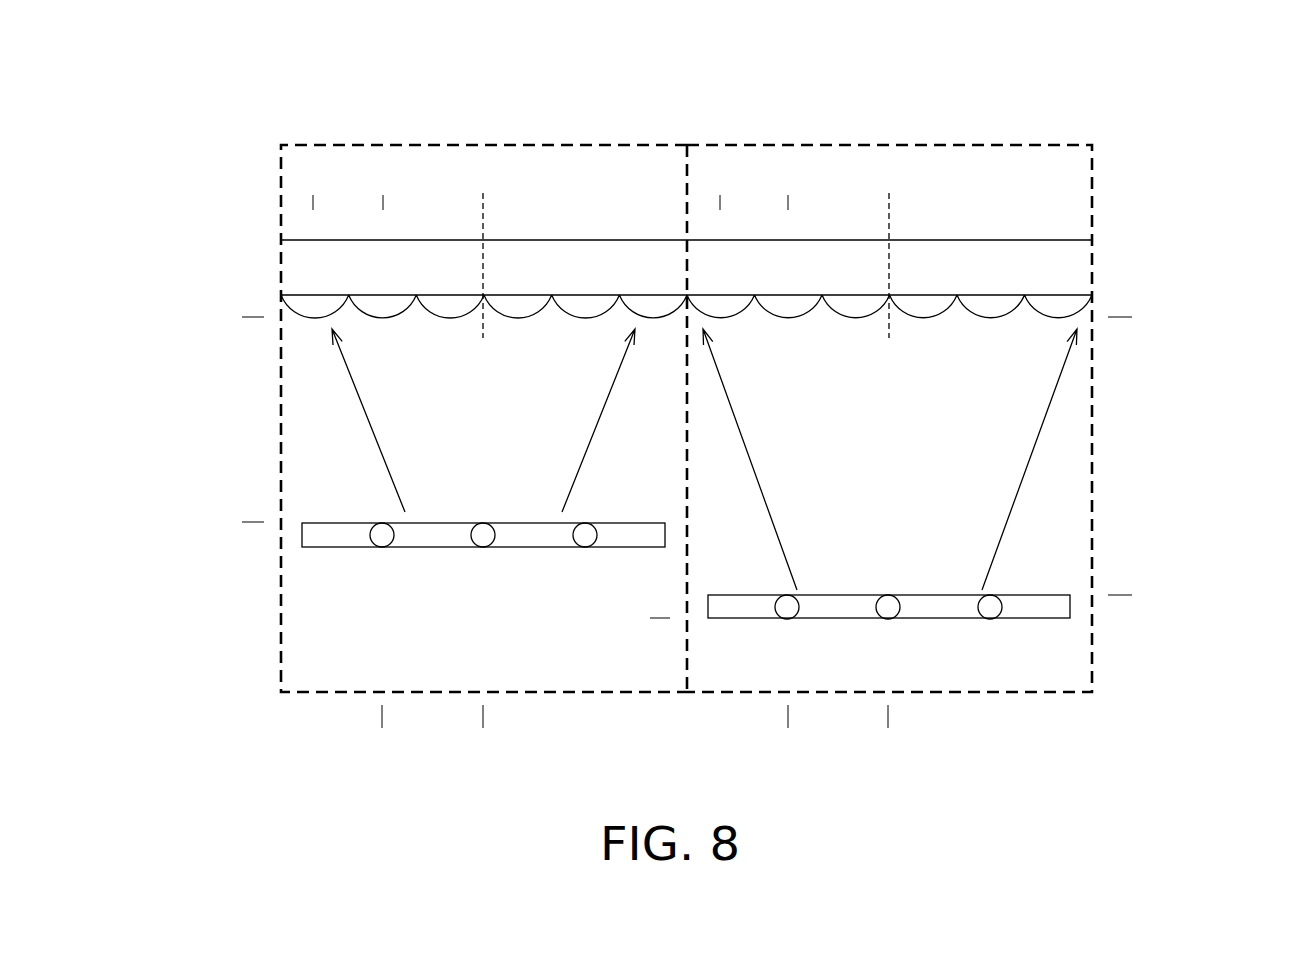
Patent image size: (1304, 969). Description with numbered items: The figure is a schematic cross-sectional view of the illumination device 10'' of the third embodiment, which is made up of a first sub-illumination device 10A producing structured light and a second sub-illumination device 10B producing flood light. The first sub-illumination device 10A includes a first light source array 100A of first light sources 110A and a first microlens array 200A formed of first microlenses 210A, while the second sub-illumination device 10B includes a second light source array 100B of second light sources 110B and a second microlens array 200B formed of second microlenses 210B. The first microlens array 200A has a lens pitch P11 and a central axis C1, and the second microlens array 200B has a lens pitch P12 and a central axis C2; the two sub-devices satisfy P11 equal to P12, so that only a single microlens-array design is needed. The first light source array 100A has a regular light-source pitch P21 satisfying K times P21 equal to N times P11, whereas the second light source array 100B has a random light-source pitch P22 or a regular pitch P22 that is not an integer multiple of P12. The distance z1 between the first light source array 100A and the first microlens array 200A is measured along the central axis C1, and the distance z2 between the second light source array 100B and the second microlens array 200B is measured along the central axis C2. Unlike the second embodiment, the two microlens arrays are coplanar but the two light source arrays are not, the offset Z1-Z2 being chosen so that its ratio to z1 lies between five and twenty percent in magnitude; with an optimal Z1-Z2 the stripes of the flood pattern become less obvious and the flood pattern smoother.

The second sub-illumination device 10B is at (347, 145).
The first sub-illumination device 10A is at (1027, 145).
The second microlenses 210B is at (302, 306).
The second microlens array 200B is at (378, 279).
The first microlenses 210A is at (1063, 307).
The first microlens array 200A is at (993, 279).
The second light sources 110B is at (382, 535).
The second light source array 100B is at (367, 556).
The first light sources 110A is at (990, 607).
The first light source array 100A is at (1004, 627).
The central axis of the second microlens array C2 is at (485, 208).
The central axis of the first microlens array C1 is at (892, 208).
The lens pitch of the second microlens array P12 is at (374, 200).
The lens pitch of the first microlens array P11 is at (779, 200).
The light-source pitch of the second light source array P22 is at (474, 718).
The light-source pitch of the first light source array P21 is at (879, 718).
The distance between the second light source array and the second microlens array z2 is at (248, 317).
The distance between the first light source array and the first microlens array z1 is at (1125, 317).
The difference between the distances z1 and z2 Z1-Z2 is at (658, 547).
The illumination device 10'' is at (1212, 772).